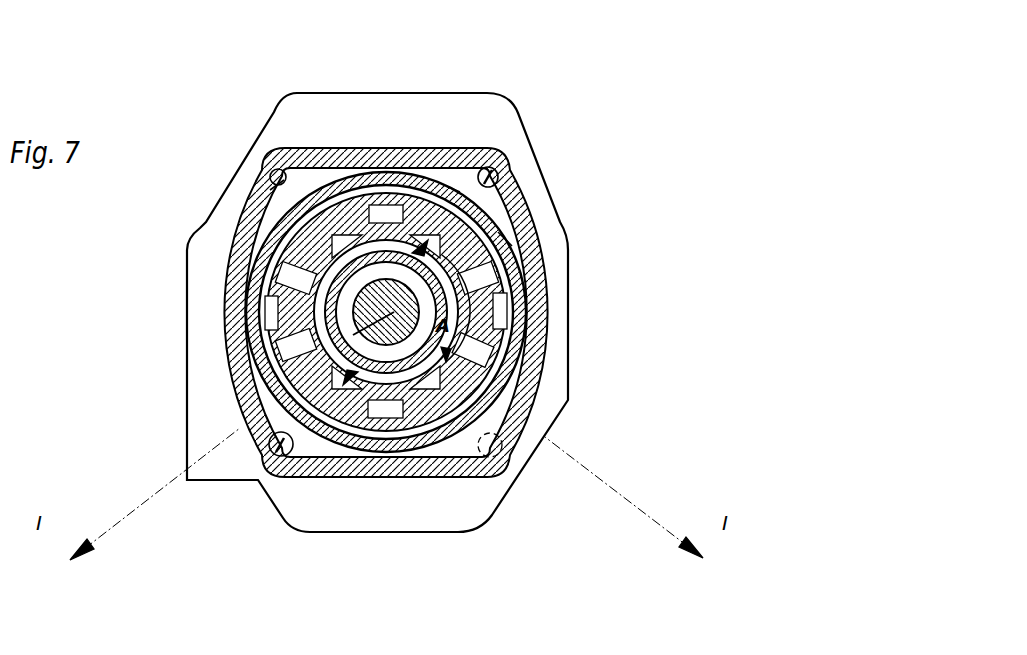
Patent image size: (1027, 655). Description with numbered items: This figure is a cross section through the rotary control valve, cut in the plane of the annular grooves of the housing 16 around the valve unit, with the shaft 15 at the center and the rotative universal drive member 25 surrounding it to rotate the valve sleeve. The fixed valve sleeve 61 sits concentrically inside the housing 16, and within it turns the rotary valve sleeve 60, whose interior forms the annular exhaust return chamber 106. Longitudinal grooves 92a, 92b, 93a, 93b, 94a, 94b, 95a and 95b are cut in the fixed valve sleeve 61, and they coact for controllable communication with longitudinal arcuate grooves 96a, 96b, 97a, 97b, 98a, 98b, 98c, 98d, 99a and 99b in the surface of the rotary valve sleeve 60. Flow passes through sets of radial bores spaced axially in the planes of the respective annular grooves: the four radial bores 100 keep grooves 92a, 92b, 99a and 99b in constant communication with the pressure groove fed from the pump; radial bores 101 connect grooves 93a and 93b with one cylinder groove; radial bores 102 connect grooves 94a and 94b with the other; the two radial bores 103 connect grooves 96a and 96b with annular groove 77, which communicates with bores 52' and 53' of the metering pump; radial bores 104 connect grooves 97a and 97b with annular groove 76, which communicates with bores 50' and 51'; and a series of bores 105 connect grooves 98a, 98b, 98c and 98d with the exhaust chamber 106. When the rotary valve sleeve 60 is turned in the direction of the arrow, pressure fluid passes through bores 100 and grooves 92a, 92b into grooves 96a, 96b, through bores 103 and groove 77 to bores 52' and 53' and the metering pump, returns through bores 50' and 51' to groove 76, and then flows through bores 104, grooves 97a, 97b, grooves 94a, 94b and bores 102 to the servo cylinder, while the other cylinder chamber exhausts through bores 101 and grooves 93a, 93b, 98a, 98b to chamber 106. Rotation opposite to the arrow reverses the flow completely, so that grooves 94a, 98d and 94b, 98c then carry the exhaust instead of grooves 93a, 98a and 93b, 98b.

The shaft 15 is at (378, 305).
The housing 16 is at (532, 343).
The rotative universal drive member 25 is at (330, 250).
The bore 50' is at (254, 145).
The bore 51' is at (552, 499).
The bore 52' is at (259, 495).
The bore 53' is at (514, 117).
The rotary valve sleeve 60 is at (388, 413).
The fixed valve sleeve 61 is at (437, 433).
The annular groove 76 is at (434, 210).
The annular groove 77 is at (352, 238).
The longitudinal groove 92a is at (285, 330).
The longitudinal groove 92b is at (520, 297).
The longitudinal groove 93a is at (256, 440).
The longitudinal groove 93b is at (505, 240).
The longitudinal groove 94a is at (288, 246).
The longitudinal groove 94b is at (515, 422).
The longitudinal groove 95a is at (373, 418).
The longitudinal groove 95b is at (414, 225).
The longitudinal arcuate groove 96a is at (280, 383).
The longitudinal arcuate groove 96b is at (520, 255).
The longitudinal arcuate groove 97a is at (288, 272).
The longitudinal arcuate groove 97b is at (512, 352).
The longitudinal arcuate groove 98a is at (343, 420).
The longitudinal arcuate groove 98b is at (453, 188).
The longitudinal arcuate groove 98c is at (505, 490).
The longitudinal arcuate groove 98d is at (276, 180).
The longitudinal arcuate groove 99a is at (412, 420).
The longitudinal arcuate groove 99b is at (383, 205).
The radial bores 100 is at (400, 238).
The radial bores 101 is at (510, 222).
The radial bores 102 is at (300, 222).
The radial bores 103 is at (540, 300).
The radial bores 104 is at (505, 365).
The bores 105 is at (358, 420).
The annular exhaust return chamber 106 is at (455, 400).